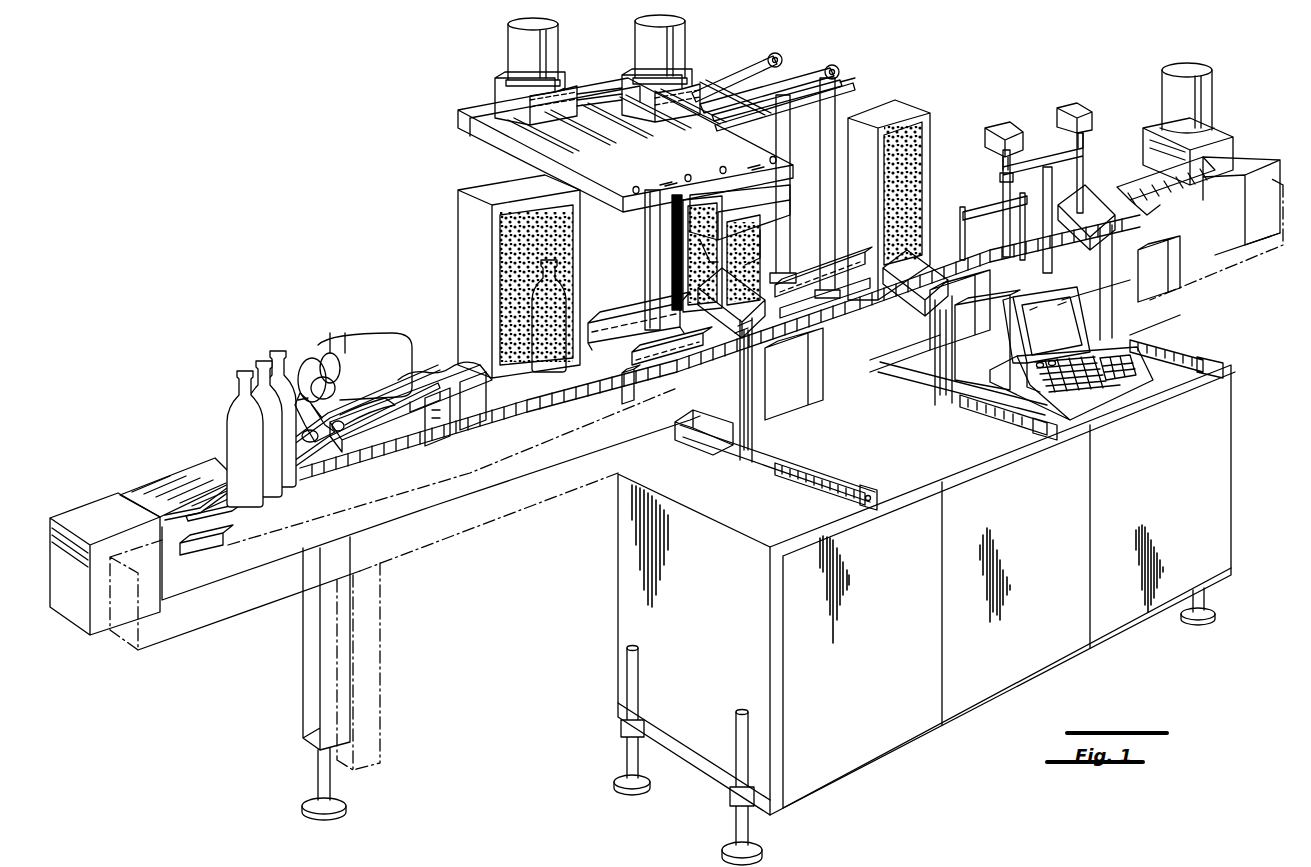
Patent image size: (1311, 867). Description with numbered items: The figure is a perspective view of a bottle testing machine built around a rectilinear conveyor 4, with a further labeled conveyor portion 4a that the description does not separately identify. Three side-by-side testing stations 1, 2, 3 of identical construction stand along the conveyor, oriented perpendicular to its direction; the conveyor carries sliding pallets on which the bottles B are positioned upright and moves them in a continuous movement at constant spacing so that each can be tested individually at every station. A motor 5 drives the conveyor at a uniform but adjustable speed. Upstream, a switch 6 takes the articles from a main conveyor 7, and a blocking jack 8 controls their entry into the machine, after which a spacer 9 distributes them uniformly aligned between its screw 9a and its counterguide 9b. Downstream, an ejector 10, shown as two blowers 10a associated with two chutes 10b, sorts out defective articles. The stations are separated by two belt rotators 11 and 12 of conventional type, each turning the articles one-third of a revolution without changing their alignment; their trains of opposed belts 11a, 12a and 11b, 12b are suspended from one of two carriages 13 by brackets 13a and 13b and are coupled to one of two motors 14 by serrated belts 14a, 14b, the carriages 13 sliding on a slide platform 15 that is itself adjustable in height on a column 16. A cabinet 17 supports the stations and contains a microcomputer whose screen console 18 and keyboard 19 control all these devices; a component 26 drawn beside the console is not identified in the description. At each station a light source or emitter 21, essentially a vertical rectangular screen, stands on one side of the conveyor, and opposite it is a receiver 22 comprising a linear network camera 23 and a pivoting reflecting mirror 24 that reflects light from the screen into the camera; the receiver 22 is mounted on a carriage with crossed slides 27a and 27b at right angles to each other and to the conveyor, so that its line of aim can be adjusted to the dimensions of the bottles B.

The testing station 1 is at (824, 406).
The testing station 2 is at (925, 410).
The testing station 3 is at (1190, 307).
The rectilinear conveyor 4 is at (78, 512).
The infeed conveyor section 4a is at (155, 500).
The motor 5 is at (1165, 95).
The switch 6 is at (203, 553).
The main conveyor 7 is at (205, 627).
The blocking jack 8 is at (283, 510).
The spacer 9 is at (348, 343).
The screw 9a is at (386, 395).
The counterguide 9b is at (385, 437).
The ejector 10 is at (1075, 85).
The blowers 10a is at (1000, 178).
The chutes 10b is at (990, 222).
The belt rotator 11 is at (630, 312).
The train of opposed belts 11a is at (630, 398).
The train of opposed belts 11b is at (628, 342).
The belt rotator 12 is at (874, 270).
The train of opposed belts 12a is at (820, 333).
The train of opposed belts 12b is at (820, 270).
The carriage 13 is at (488, 108).
The bracket 13a is at (848, 78).
The link 13b is at (800, 60).
The motor 14 is at (515, 46).
The serrated belt 14a is at (808, 70).
The serrated belt 14b is at (702, 66).
The slide platform 15 is at (482, 148).
The column 16 is at (783, 200).
The cabinet 17 is at (620, 627).
The screen console 18 is at (1040, 336).
The keyboard 19 is at (1135, 382).
The light source or emitter 21 is at (462, 248).
The receiver 22 is at (776, 480).
The linear network camera 23 is at (714, 342).
The pivoting reflecting mirror 24 is at (780, 372).
The computer housing 26 is at (958, 315).
The slide 27a is at (820, 480).
The slide 27b is at (726, 447).
The bottle B is at (232, 422).